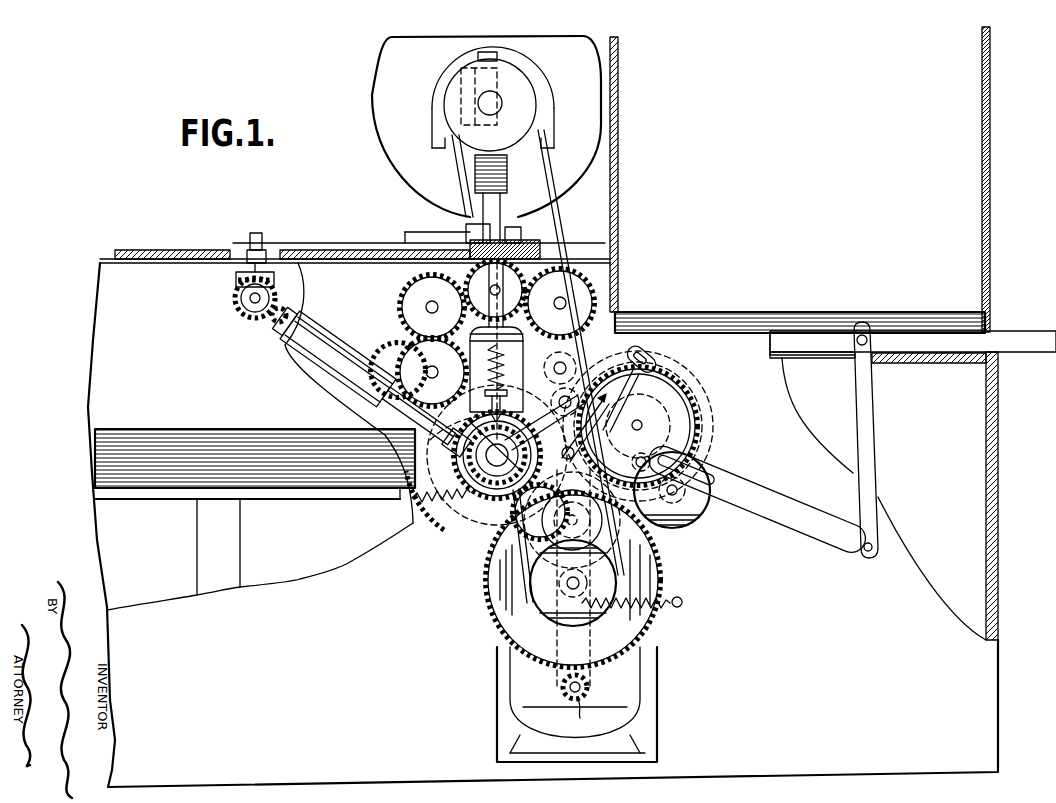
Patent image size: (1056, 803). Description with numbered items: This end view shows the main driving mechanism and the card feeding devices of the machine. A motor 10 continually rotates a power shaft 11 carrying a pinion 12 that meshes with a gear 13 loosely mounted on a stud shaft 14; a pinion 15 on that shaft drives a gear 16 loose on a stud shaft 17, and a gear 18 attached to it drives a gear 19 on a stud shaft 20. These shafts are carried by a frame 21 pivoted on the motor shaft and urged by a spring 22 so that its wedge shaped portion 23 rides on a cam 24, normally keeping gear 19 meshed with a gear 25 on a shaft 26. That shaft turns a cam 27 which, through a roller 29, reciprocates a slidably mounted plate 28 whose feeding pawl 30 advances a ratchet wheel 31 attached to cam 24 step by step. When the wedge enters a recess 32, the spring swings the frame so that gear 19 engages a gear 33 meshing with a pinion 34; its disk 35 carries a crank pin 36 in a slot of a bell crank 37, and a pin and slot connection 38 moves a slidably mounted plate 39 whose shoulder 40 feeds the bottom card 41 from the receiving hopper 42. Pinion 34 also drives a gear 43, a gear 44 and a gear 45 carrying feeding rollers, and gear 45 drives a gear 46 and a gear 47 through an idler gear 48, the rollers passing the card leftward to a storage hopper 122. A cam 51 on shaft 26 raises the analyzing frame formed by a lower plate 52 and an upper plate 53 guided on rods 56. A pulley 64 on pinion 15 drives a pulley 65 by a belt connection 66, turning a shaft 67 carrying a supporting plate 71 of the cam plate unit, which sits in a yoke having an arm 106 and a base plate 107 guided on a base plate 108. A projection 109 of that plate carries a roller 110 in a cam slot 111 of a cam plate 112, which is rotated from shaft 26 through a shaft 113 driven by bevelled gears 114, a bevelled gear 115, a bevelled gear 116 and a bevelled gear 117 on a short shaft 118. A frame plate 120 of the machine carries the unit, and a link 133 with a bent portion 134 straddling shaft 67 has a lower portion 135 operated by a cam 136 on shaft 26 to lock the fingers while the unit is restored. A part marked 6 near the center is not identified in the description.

The pivot pin 6 is at (575, 431).
The motor 10 is at (630, 680).
The power shaft 11 is at (592, 713).
The pinion 12 is at (562, 690).
The gear 13 is at (650, 567).
The stud shaft 14 is at (568, 588).
The pinion 15 is at (553, 626).
The gear 16 is at (620, 539).
The stud shaft 17 is at (515, 548).
The gear 18 is at (495, 570).
The gear 19 is at (522, 516).
The stud shaft 20 is at (633, 428).
The frame 21 is at (597, 644).
The spring 22 is at (676, 606).
The wedge shaped portion 23 is at (606, 398).
The cam 24 is at (710, 410).
The gear 25 is at (472, 506).
The shaft 26 is at (440, 460).
The cam 27 is at (512, 430).
The slidably mounted plate 28 is at (630, 384).
The roller 29 is at (560, 399).
The feeding pawl 30 is at (558, 360).
The ratchet wheel 31 is at (697, 390).
The recess 32 is at (642, 456).
The gear 33 is at (702, 432).
The pinion 34 is at (688, 498).
The disk 35 is at (708, 517).
The crank pin 36 is at (700, 470).
The bell crank 37 is at (757, 499).
The pin and slot connection 38 is at (862, 326).
The slidably mounted plate 39 is at (905, 340).
The card picker 40 is at (990, 332).
The cards 41 is at (735, 316).
The receiving hopper 42 is at (624, 303).
The gear 43 is at (672, 374).
The gear 44 is at (578, 336).
The gear 45 is at (576, 291).
The gear 46 is at (399, 297).
The gear 47 is at (405, 354).
The idler gear 48 is at (548, 246).
The cam 51 is at (430, 434).
The lower plate 52 is at (497, 351).
The upper plate 53 is at (432, 372).
The rods 56 is at (495, 420).
The pulley 64 is at (548, 587).
The pulley 65 is at (530, 95).
The belt connection 66 is at (547, 154).
The shaft 67 is at (477, 106).
The supporting plate 71 is at (380, 150).
The arm 106 is at (515, 178).
The base plate 107 is at (440, 231).
The base plate 108 is at (525, 238).
The laterally extending projection 109 is at (348, 241).
The roller 110 is at (253, 240).
The cam slot 111 is at (235, 248).
The cam plate 112 is at (160, 249).
The shaft 113 is at (395, 408).
The bevelled gears 114 is at (468, 450).
The bevelled gear 115 is at (272, 322).
The bevelled gear 116 is at (236, 307).
The bevelled gear 117 is at (236, 280).
The short shaft 118 is at (266, 245).
The frame plate 120 is at (524, 62).
The storage hopper 122 is at (177, 418).
The link 133 is at (470, 200).
The bent portion 134 is at (455, 82).
The portion 135 is at (445, 420).
The cam 136 is at (545, 541).